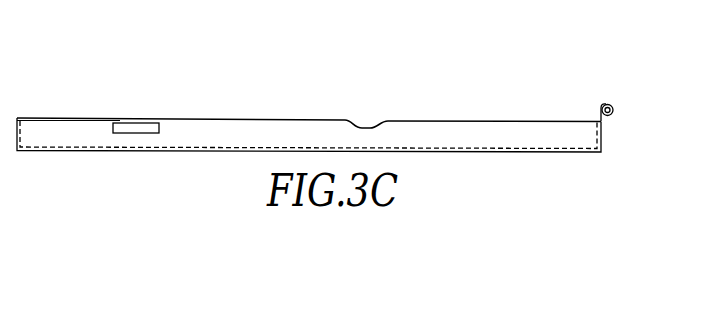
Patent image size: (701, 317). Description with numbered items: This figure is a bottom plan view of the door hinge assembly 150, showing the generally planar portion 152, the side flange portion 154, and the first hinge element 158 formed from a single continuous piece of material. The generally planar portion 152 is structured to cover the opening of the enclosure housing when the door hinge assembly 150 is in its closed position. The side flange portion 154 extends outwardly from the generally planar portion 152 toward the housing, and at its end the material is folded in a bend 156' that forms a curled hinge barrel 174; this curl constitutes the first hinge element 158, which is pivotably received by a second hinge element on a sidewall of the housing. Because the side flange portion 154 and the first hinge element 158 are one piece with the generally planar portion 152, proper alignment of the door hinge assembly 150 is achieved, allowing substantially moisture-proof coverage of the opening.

The door hinge assembly 150 is at (628, 174).
The generally planar portion 152 is at (78, 152).
The side flange portion 154 is at (604, 138).
The bend 156' is at (579, 97).
The first hinge element 158 is at (609, 103).
The curled hinge barrel 174 is at (613, 116).